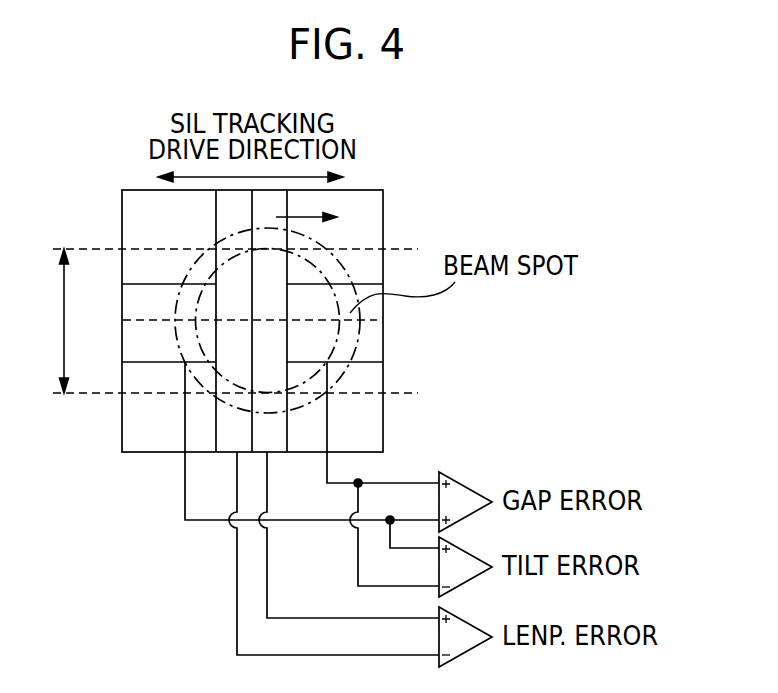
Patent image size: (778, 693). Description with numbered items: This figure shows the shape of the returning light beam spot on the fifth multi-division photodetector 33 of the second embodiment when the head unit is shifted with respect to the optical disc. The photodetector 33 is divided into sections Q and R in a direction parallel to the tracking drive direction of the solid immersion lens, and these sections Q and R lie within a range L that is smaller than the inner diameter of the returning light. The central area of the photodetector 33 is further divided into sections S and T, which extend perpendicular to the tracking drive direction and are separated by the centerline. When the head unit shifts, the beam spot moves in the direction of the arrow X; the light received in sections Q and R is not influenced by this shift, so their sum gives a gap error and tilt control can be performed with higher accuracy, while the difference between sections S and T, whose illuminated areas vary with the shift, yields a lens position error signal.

The fifth multi-division photodetector 33 is at (377, 218).
The section Q is at (169, 368).
The section R is at (335, 368).
The section S is at (328, 539).
The section T is at (349, 520).
The range L is at (74, 321).
The arrow X is at (316, 214).